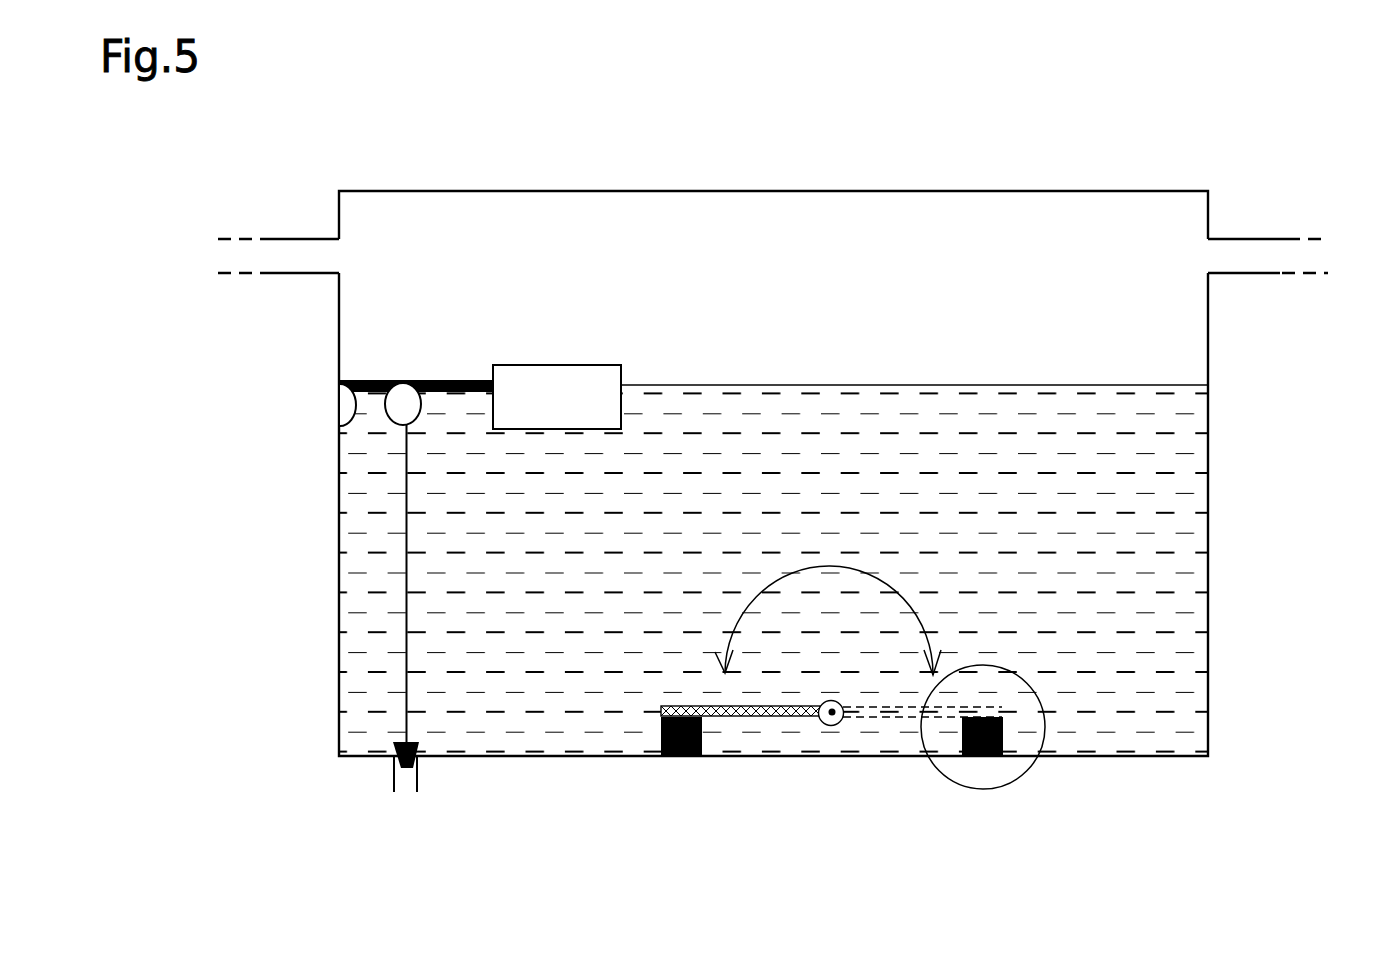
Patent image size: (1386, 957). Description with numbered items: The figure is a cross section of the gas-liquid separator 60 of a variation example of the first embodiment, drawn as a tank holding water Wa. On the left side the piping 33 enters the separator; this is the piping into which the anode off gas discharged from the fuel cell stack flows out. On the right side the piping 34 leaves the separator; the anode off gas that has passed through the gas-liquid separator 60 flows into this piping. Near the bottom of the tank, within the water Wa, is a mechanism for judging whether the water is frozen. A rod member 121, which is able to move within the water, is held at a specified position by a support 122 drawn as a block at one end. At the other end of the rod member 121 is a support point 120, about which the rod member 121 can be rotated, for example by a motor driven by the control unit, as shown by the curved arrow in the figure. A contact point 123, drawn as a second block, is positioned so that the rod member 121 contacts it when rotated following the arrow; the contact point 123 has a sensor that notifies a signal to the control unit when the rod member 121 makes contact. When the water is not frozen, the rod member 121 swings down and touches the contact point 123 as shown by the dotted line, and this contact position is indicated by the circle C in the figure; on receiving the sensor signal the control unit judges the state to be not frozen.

The gas-liquid separator 60 is at (398, 186).
The piping 33 is at (250, 275).
The piping 34 is at (1278, 275).
The cleaning liquid (water) Wa is at (1177, 572).
The support point 120 is at (831, 726).
The rod member 121 is at (762, 717).
The support 122 is at (675, 757).
The contact point 123 is at (973, 757).
The circle C is at (1013, 783).